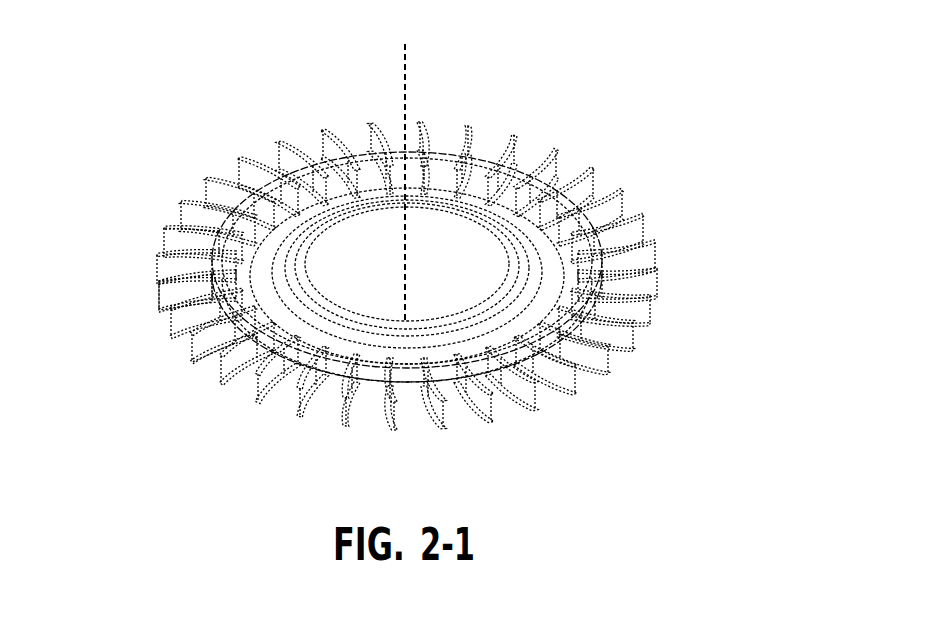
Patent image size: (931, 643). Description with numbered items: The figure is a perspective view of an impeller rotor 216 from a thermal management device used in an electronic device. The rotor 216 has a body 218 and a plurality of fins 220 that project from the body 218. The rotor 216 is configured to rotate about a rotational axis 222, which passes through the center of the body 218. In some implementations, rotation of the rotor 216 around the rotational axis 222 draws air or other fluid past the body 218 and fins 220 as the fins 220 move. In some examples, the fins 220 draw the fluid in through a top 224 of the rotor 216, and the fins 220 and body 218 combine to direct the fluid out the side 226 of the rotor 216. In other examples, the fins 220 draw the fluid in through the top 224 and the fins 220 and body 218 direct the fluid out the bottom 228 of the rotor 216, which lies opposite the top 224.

The impeller rotor 216 is at (420, 238).
The body 218 is at (483, 310).
The fins 220 is at (647, 305).
The rotational axis 222 is at (461, 171).
The top 224 is at (208, 230).
The side 226 is at (157, 277).
The bottom 228 is at (178, 352).